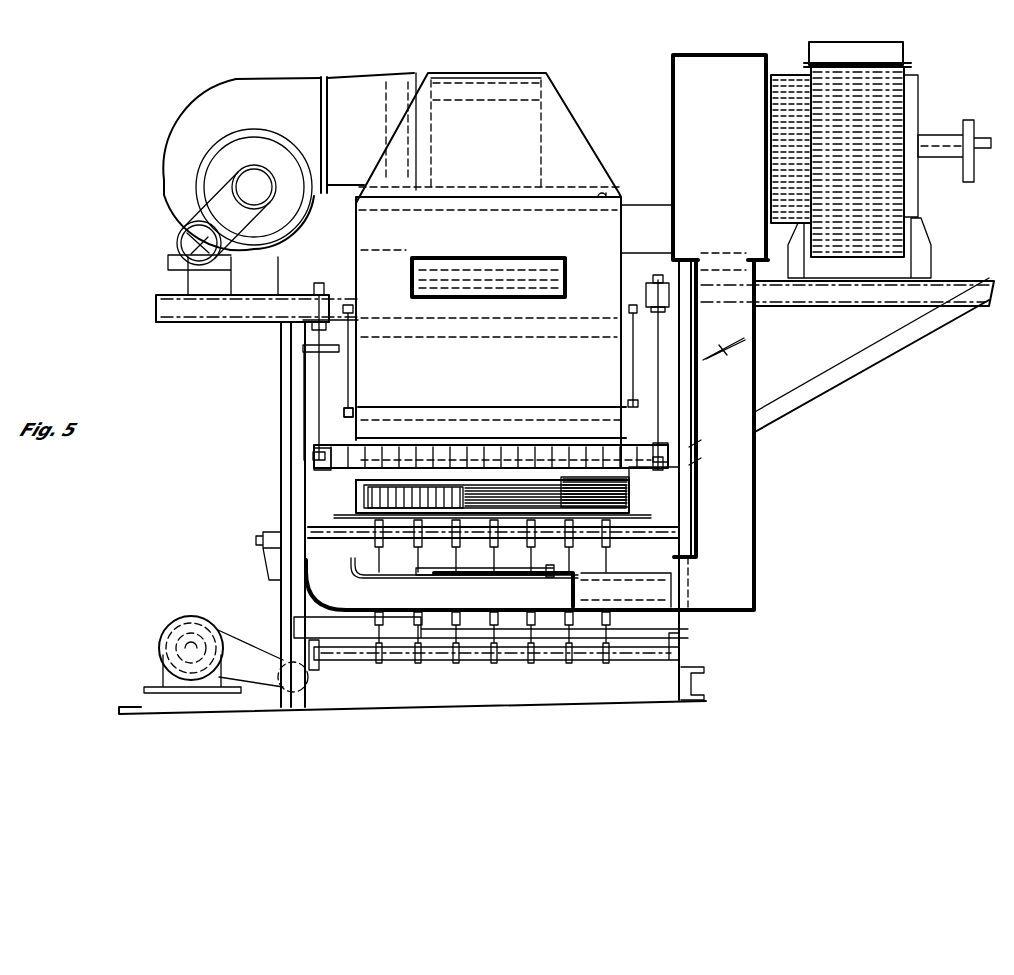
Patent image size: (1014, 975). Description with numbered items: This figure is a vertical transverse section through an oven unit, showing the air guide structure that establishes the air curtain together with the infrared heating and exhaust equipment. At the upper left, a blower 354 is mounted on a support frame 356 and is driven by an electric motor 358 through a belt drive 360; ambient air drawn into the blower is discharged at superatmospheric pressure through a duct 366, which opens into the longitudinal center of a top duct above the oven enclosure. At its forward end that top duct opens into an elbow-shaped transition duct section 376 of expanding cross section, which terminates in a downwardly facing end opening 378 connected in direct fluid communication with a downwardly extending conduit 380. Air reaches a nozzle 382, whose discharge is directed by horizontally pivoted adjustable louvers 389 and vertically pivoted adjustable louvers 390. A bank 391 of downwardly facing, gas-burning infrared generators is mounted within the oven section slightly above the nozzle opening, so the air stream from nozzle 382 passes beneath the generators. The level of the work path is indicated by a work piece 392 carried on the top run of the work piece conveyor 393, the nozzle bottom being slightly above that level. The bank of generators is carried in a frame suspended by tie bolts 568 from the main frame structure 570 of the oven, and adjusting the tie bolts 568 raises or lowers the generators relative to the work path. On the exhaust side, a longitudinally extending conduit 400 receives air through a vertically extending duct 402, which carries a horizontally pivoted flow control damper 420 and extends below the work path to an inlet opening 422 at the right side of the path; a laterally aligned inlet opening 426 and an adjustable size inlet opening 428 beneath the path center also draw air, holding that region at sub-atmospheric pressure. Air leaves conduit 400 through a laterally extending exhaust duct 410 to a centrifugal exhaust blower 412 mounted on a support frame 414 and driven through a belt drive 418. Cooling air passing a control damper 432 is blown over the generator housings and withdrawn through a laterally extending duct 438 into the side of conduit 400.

The blower 354 is at (183, 131).
The support frame 356 is at (163, 310).
The electric motor 358 is at (177, 229).
The belt drive 360 is at (251, 223).
The duct 366 is at (363, 84).
The elbow-shaped transition duct section 376 is at (582, 141).
The end opening 378 is at (615, 186).
The downwardly extending conduit 380 is at (360, 389).
The nozzle 382 is at (372, 505).
The horizontally pivoted adjustable louvers 389 is at (522, 487).
The vertically pivoted adjustable louvers 390 is at (365, 507).
The bank of infrared generators 391 is at (430, 452).
The work piece 392 is at (640, 512).
The work piece conveyor 393 is at (570, 516).
The exhaust conduit 400 is at (725, 53).
The vertically extending duct 402 is at (753, 580).
The exhaust duct 410 is at (783, 183).
The centrifugal exhaust blower 412 is at (915, 111).
The support frame 414 is at (807, 297).
The belt drive 418 is at (963, 177).
The flow control damper 420 is at (711, 361).
The inlet opening 422 is at (668, 578).
The inlet opening 426 is at (334, 576).
The adjustable size inlet opening 428 is at (476, 577).
The control damper 432 is at (476, 267).
The laterally extending duct 438 is at (410, 250).
The tie bolts 568 is at (318, 403).
The main frame structure 570 is at (338, 348).